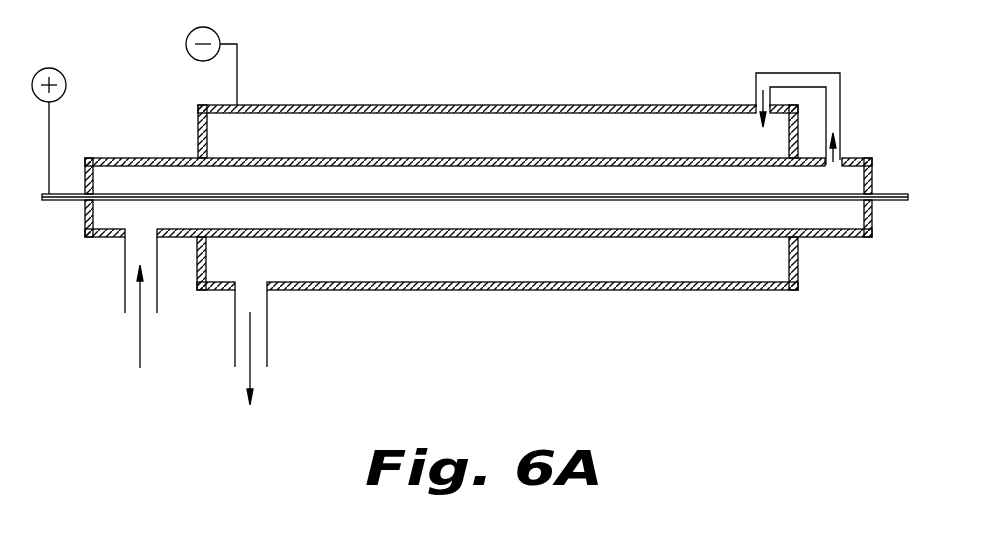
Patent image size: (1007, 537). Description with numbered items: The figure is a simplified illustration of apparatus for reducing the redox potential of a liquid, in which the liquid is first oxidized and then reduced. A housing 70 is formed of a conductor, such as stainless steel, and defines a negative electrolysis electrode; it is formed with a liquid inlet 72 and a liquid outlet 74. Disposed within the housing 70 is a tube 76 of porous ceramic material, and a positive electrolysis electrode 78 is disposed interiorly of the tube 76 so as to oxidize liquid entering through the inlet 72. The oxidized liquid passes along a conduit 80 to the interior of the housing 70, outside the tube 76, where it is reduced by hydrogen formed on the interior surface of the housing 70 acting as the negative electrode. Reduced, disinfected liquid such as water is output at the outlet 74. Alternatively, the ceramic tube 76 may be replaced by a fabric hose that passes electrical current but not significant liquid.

The housing 70 is at (593, 105).
The liquid inlet 72 is at (123, 262).
The liquid outlet 74 is at (270, 318).
The tube 76 is at (542, 157).
The positive electrolysis electrode 78 is at (528, 200).
The conduit 80 is at (803, 73).